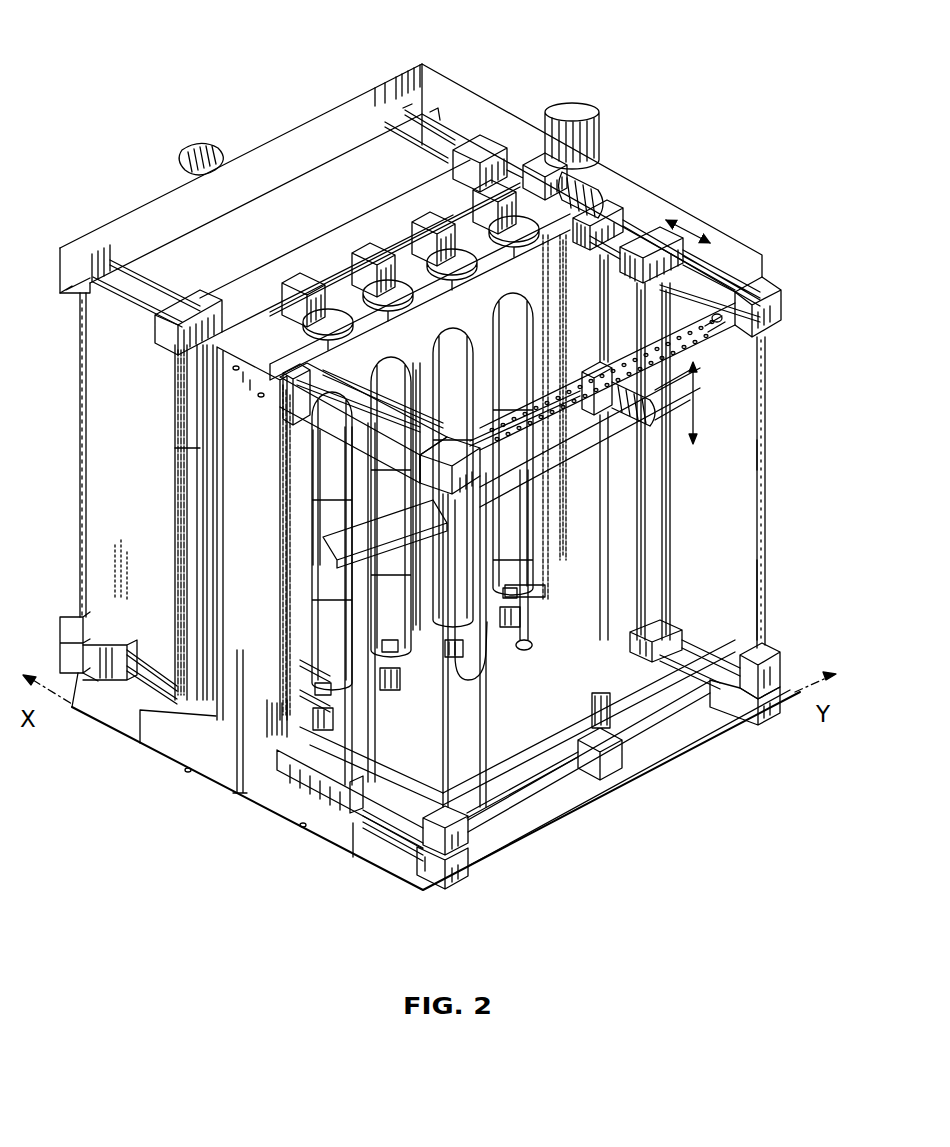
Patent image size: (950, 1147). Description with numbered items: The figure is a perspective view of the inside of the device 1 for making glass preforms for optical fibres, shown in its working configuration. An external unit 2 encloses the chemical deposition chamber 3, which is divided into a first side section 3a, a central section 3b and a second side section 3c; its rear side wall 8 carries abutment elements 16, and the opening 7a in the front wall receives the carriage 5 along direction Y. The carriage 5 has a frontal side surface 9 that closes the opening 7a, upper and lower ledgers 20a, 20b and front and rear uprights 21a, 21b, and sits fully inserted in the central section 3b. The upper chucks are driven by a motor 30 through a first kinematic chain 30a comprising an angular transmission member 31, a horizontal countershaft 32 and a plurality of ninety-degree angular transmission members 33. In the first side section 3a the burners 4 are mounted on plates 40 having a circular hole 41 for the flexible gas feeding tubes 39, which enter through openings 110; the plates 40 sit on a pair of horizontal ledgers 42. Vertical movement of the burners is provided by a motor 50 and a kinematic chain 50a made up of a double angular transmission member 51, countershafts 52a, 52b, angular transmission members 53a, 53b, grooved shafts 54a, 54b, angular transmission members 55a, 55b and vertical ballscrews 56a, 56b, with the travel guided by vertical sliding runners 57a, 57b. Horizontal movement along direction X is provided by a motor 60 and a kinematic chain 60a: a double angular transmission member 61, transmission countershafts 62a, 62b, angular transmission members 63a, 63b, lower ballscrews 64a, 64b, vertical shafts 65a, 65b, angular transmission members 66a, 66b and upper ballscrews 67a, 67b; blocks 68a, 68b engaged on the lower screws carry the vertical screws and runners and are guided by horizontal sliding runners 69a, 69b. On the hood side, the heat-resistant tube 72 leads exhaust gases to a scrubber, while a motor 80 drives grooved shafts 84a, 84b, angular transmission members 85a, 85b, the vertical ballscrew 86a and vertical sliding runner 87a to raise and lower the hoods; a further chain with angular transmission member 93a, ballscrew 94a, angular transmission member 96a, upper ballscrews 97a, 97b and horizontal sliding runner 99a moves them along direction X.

The device for manufacturing preforms 1 is at (212, 875).
The external unit 2 is at (772, 460).
The chemical deposition chamber 3 is at (738, 580).
The first side section 3a is at (722, 246).
The central section 3b is at (668, 194).
The second side section 3c is at (462, 112).
The burner 4 is at (425, 455).
The carriage 5 is at (228, 748).
The opening 7a is at (128, 745).
The rear side wall 8 is at (673, 197).
The frontal side surface 9 is at (241, 640).
The abutment element 16 is at (553, 245).
The upper ledger 20a is at (458, 306).
The lower ledger 20b is at (416, 659).
The front upright 21a is at (256, 721).
The rear upright 21b is at (548, 545).
The motor 30 is at (603, 186).
The first kinematic chain 30a is at (340, 233).
The angular transmission member 31 is at (572, 165).
The horizontal countershaft 32 is at (362, 250).
The 90° angular transmission member 33 is at (292, 280).
The gas feeding tube 39 is at (480, 690).
The plate 40 is at (430, 478).
The circular hole 41 is at (440, 500).
The ledgers 42 is at (560, 452).
The motor 50 is at (650, 418).
The kinematic chain 50a is at (738, 428).
The double angular transmission member 51 is at (592, 368).
The countershaft 52a is at (612, 510).
The countershaft 52b is at (703, 403).
The 90° angular transmission member 53a is at (488, 478).
The 90° angular transmission member 53b is at (763, 350).
The grooved shaft 54a is at (345, 410).
The grooved shaft 54b is at (712, 276).
The 90° angular transmission member 55a is at (312, 392).
The 90° angular transmission member 55b is at (628, 222).
The vertical ballscrew 56a is at (300, 710).
The vertical ballscrew 56b is at (647, 540).
The vertical sliding runner 57a is at (395, 445).
The vertical sliding runner 57b is at (672, 523).
The motor 60 is at (576, 745).
The kinematic chain 60a is at (645, 762).
The double angular transmission member 61 is at (600, 770).
The transmission countershaft 62a is at (560, 810).
The transmission countershaft 62b is at (708, 720).
The 90° angular transmission member 63a is at (470, 858).
The 90° angular transmission member 63b is at (772, 648).
The ballscrew 64a is at (420, 848).
The ballscrew 64b is at (690, 640).
The vertical shaft 65a is at (440, 735).
The vertical shaft 65b is at (766, 558).
The 90° angular transmission member 66a is at (485, 490).
The 90° angular transmission member 66b is at (780, 298).
The ballscrew 67a is at (368, 420).
The ballscrew 67b is at (720, 300).
The block 68a is at (328, 808).
The block 68b is at (672, 630).
The horizontal sliding runner 69a is at (380, 863).
The horizontal sliding runner 69b is at (620, 690).
The heat-resistant tube 72 is at (578, 120).
The motor 80 is at (195, 148).
The grooved shaft 84a is at (148, 262).
The grooved shaft 84b is at (400, 112).
The 90° angular transmission member 85a is at (218, 288).
The 90° angular transmission member 85b is at (488, 148).
The vertical ballscrew 86a is at (185, 455).
The vertical sliding runner 87a is at (172, 410).
The 90° angular transmission member 93a is at (66, 616).
The ballscrew 94a is at (117, 700).
The 90° angular transmission member 96a is at (62, 258).
The ballscrew 97a is at (78, 332).
The ballscrew 97b is at (436, 112).
The horizontal sliding runner 99a is at (138, 642).
The opening 110 is at (714, 333).